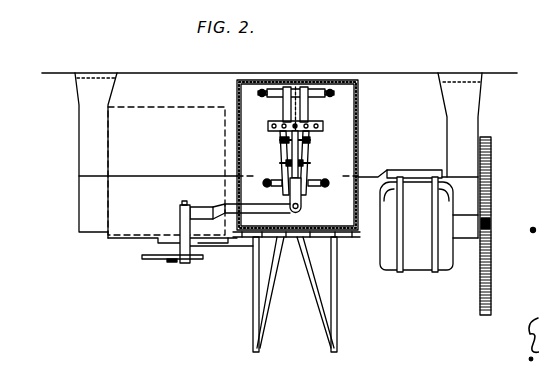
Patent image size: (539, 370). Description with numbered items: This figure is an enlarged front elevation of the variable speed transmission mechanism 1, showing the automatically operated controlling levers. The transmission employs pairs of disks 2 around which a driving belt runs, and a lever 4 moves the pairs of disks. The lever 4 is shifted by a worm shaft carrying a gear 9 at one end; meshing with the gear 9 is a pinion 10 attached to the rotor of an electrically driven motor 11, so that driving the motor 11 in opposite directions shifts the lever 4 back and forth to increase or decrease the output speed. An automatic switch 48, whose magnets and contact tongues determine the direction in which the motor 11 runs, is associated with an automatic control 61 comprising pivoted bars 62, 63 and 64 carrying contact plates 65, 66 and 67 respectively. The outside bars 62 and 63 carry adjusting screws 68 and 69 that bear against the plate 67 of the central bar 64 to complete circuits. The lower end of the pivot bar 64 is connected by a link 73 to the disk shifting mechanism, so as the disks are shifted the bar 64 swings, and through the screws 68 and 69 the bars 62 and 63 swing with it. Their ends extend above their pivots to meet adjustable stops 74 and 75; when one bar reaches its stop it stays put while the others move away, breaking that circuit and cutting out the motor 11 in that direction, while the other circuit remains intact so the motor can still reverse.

The variable speed transmission mechanism 1 is at (153, 192).
The pairs of disks 2 is at (253, 314).
The lever 4 is at (172, 263).
The gear 9 is at (492, 190).
The pinion 10 is at (492, 225).
The electrically driven motor 11 is at (420, 253).
The automatic switch 48 is at (175, 119).
The automatic control 61 is at (341, 133).
The pivoted bar 62 is at (283, 108).
The pivoted bar 63 is at (307, 110).
The pivot bar 64 is at (302, 203).
The contact plate 65 is at (282, 152).
The contact plate 66 is at (313, 155).
The contact plate 67 is at (289, 194).
The adjusting screw 68 is at (267, 179).
The adjusting screw 69 is at (331, 180).
The link 73 is at (271, 210).
The adjustable stop 74 is at (273, 91).
The adjustable stop 75 is at (328, 91).